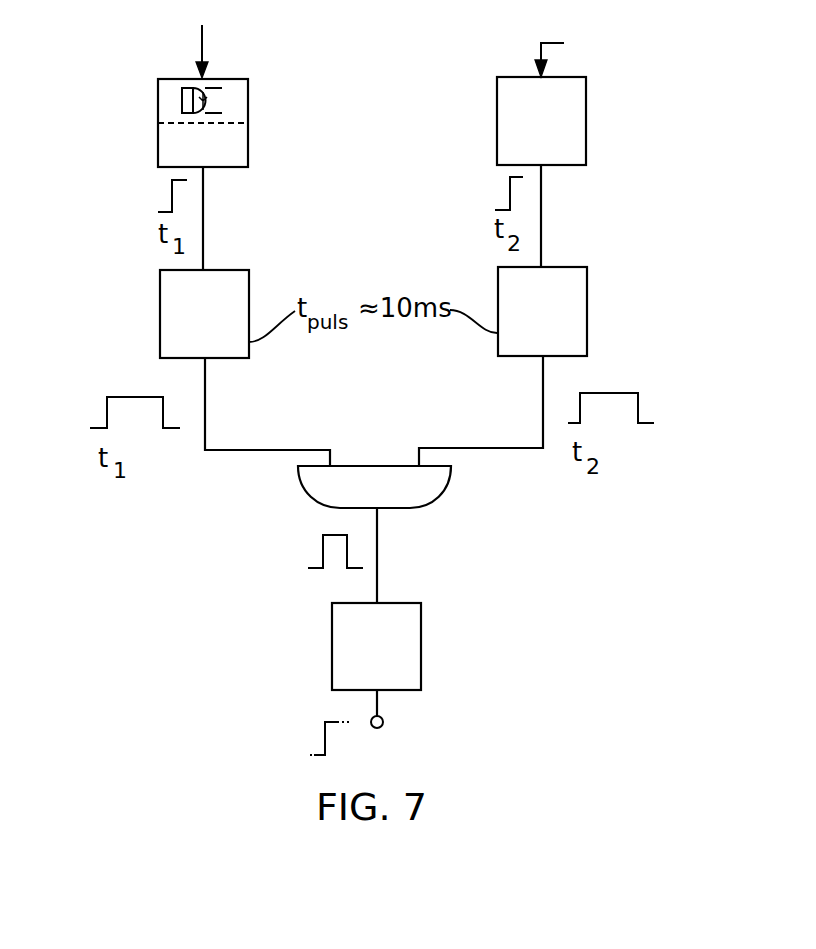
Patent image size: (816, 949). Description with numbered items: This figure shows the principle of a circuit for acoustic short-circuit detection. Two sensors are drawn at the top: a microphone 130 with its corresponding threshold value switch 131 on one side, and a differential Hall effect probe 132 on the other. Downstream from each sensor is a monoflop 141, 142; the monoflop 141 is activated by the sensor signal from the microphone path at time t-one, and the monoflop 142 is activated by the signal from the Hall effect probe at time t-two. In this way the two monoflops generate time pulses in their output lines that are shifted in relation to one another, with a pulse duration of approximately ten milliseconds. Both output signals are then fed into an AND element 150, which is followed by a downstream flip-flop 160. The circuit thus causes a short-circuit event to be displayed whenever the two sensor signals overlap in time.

The microphone 130 is at (158, 112).
The threshold value switch 131 is at (158, 142).
The differential Hall effect probe 132 is at (586, 115).
The monoflop 141 is at (160, 325).
The monoflop 142 is at (587, 318).
The AND element 150 is at (452, 478).
The flip-flop 160 is at (421, 643).